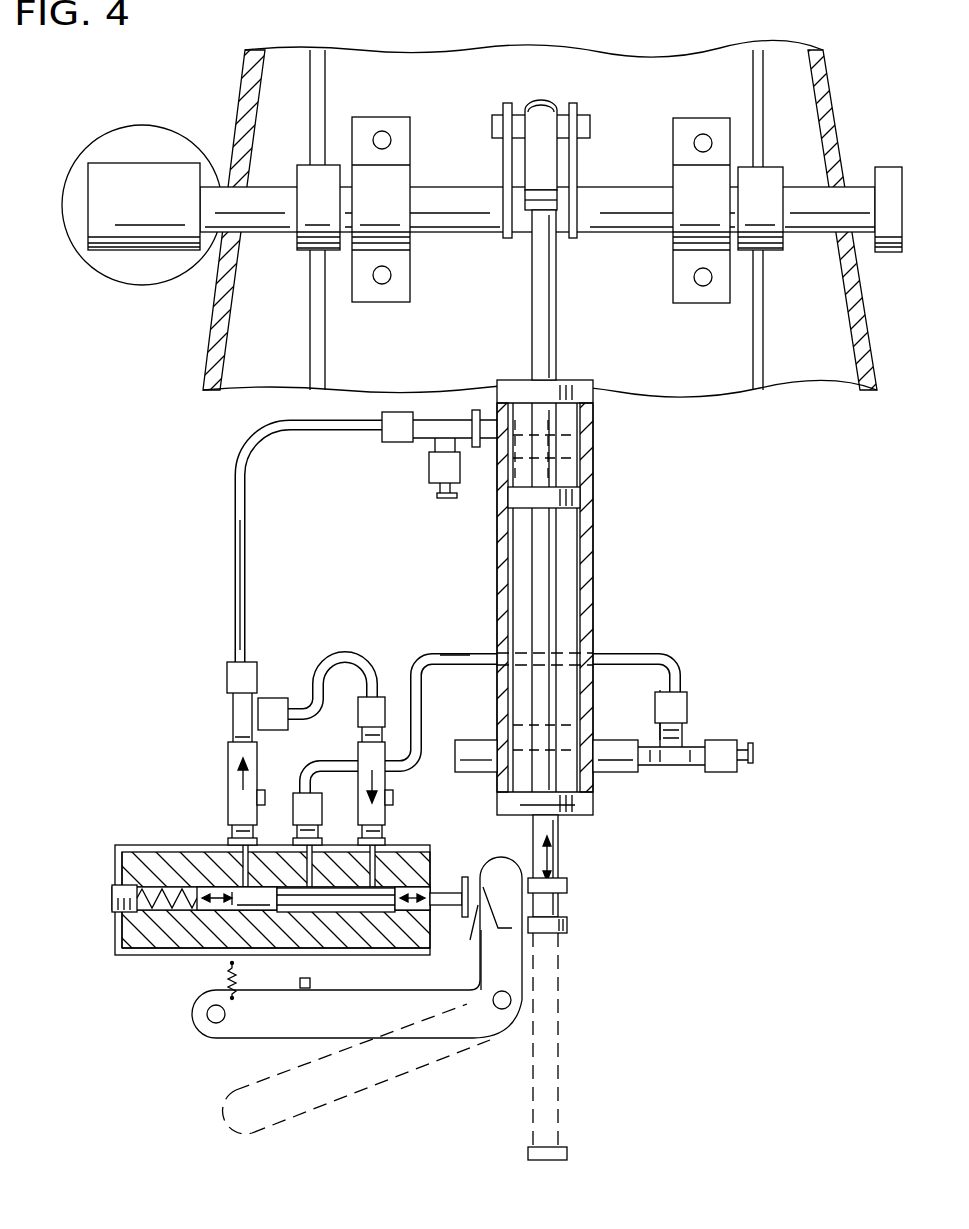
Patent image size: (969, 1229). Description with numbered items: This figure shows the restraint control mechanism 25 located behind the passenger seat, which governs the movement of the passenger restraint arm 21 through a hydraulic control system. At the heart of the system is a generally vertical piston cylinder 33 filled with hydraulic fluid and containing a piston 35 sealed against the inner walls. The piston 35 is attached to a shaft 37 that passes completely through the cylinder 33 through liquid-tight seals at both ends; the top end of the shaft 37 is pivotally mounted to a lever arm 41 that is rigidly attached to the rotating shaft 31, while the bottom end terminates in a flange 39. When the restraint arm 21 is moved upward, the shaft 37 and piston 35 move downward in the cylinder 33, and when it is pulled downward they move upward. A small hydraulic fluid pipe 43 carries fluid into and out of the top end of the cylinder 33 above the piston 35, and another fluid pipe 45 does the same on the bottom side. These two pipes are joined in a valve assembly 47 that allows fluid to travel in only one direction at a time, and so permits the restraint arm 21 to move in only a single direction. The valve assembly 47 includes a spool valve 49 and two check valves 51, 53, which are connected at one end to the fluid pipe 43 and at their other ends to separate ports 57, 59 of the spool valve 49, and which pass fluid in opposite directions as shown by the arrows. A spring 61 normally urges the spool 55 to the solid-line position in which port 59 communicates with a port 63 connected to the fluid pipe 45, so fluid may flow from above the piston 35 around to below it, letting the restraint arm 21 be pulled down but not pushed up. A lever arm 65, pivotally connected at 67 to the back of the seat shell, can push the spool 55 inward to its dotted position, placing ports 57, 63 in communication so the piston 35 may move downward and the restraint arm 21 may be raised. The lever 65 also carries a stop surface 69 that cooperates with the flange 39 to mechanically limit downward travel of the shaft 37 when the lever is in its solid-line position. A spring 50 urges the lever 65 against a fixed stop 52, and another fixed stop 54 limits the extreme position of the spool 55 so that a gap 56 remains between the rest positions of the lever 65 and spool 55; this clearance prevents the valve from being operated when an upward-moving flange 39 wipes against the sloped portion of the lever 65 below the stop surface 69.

The restraint arm 21 is at (142, 126).
The restraint control mechanism 25 is at (360, 564).
The rotating shaft 31 is at (625, 218).
The piston cylinder 33 is at (593, 597).
The piston 35 is at (580, 495).
The shaft 37 is at (556, 330).
The flange 39 is at (568, 918).
The lever arm 41 is at (576, 158).
The hydraulic fluid pipe 43 is at (288, 425).
The fluid pipe 45 is at (450, 653).
The valve assembly 47 is at (267, 888).
The spool valve 49 is at (167, 940).
The spring 50 is at (230, 980).
The check valve 51 is at (228, 760).
The fixed stop 52 is at (310, 985).
The check valve 53 is at (386, 817).
The fixed stop 54 is at (280, 913).
The spool 55 is at (456, 880).
The gap 56 is at (470, 940).
The port 57 is at (243, 865).
The port 59 is at (375, 870).
The spring 61 is at (118, 908).
The port 63 is at (310, 867).
The lever arm 65 is at (253, 1025).
The pivot 67 is at (500, 1010).
The stop surface 69 is at (537, 945).